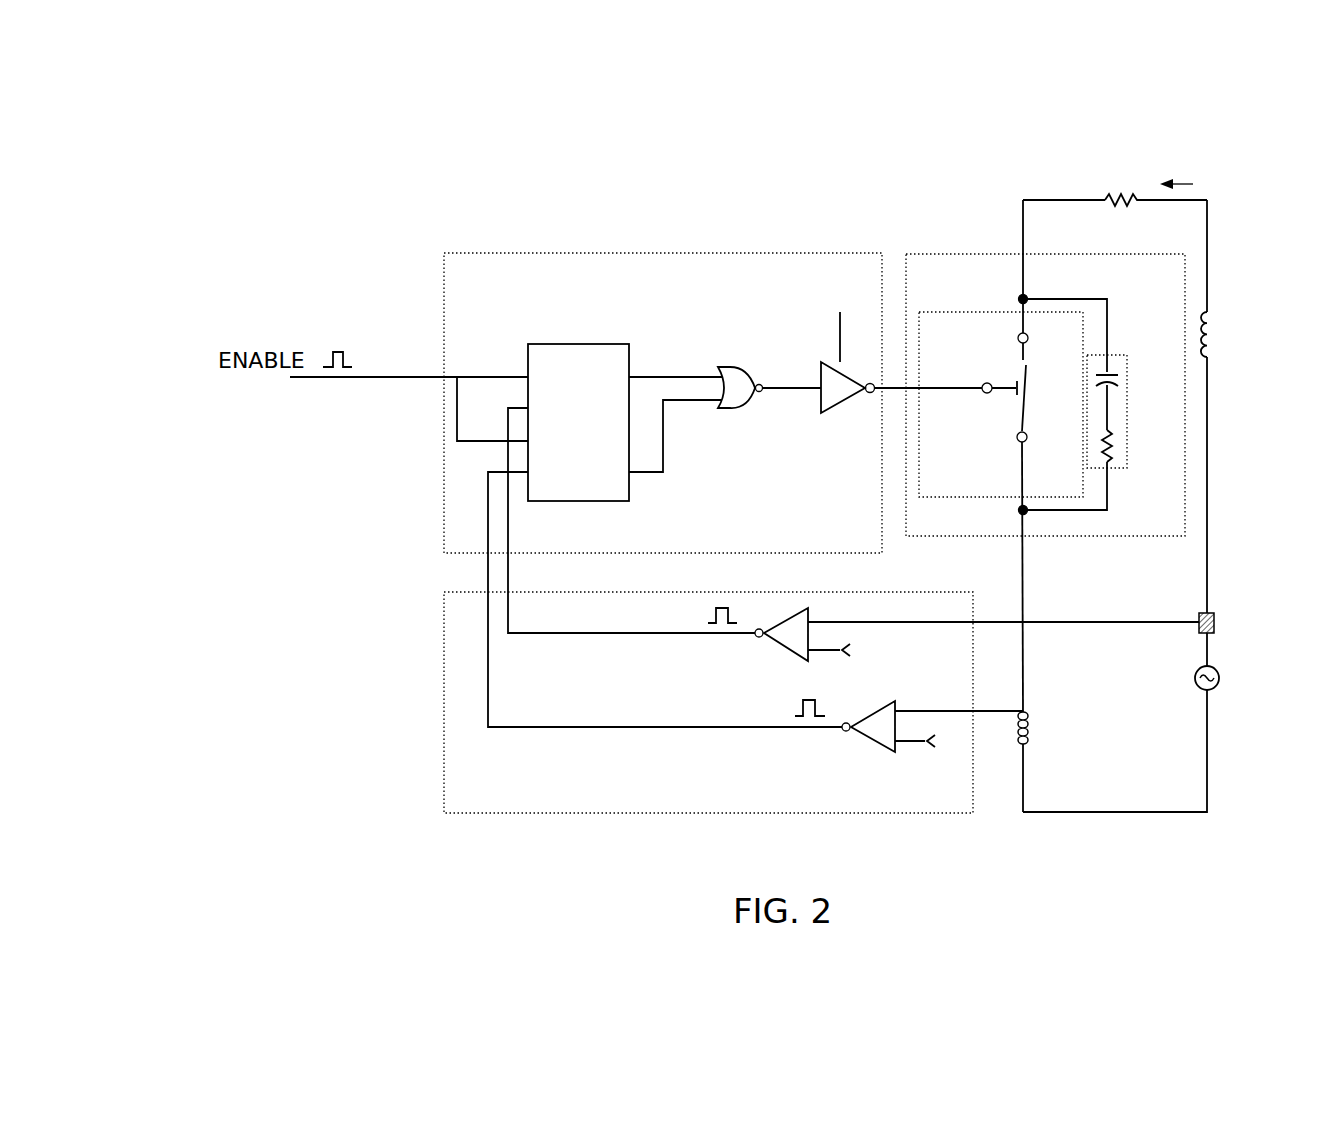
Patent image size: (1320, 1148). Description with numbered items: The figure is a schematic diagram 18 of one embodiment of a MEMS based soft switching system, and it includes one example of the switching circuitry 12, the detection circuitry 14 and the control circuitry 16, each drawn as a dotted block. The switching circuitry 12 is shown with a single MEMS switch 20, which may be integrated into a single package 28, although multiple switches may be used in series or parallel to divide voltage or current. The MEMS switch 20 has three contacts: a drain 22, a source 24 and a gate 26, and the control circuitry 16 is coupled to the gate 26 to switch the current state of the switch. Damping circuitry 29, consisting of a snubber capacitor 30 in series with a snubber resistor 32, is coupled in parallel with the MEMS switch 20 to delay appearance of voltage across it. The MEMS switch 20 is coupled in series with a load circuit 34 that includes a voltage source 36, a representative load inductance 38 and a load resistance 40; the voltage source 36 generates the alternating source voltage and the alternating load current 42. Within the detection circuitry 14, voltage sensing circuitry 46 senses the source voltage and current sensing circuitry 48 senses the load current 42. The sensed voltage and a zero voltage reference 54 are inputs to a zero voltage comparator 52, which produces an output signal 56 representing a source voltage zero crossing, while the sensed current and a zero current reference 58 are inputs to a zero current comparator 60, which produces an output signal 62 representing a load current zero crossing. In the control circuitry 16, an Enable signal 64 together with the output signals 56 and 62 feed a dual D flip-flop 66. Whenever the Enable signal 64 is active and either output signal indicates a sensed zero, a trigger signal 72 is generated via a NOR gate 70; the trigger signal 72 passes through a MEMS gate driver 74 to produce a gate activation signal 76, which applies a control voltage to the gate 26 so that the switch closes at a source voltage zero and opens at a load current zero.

The switching circuitry 12 is at (928, 254).
The detection circuitry 14 is at (443, 805).
The control circuitry 16 is at (645, 253).
The schematic diagram 18 is at (208, 131).
The MEMS switch 20 is at (1002, 456).
The drain 22 is at (1030, 340).
The source 24 is at (1016, 438).
The gate 26 is at (984, 393).
The single package 28 is at (945, 312).
The damping circuitry 29 is at (1115, 355).
The snubber capacitor 30 is at (1118, 382).
The snubber resistor 32 is at (1113, 445).
The load circuit 34 is at (1201, 850).
The voltage source 36 is at (1196, 686).
The load inductance 38 is at (1212, 318).
The load resistance 40 is at (1122, 198).
The alternating load current 42 is at (1180, 183).
The voltage sensing circuitry 46 is at (1214, 612).
The current sensing circuitry 48 is at (1028, 735).
The zero voltage comparator 52 is at (790, 653).
The zero voltage reference 54 is at (834, 652).
The output signal 56 is at (708, 620).
The zero current reference 58 is at (912, 743).
The zero current comparator 60 is at (872, 747).
The output signal 62 is at (798, 714).
The Enable signal 64 is at (338, 352).
The dual D flip-flop 66 is at (568, 344).
The NOR gate 70 is at (732, 374).
The trigger signal 72 is at (782, 391).
The MEMS gate driver 74 is at (842, 414).
The gate activation signal 76 is at (890, 383).